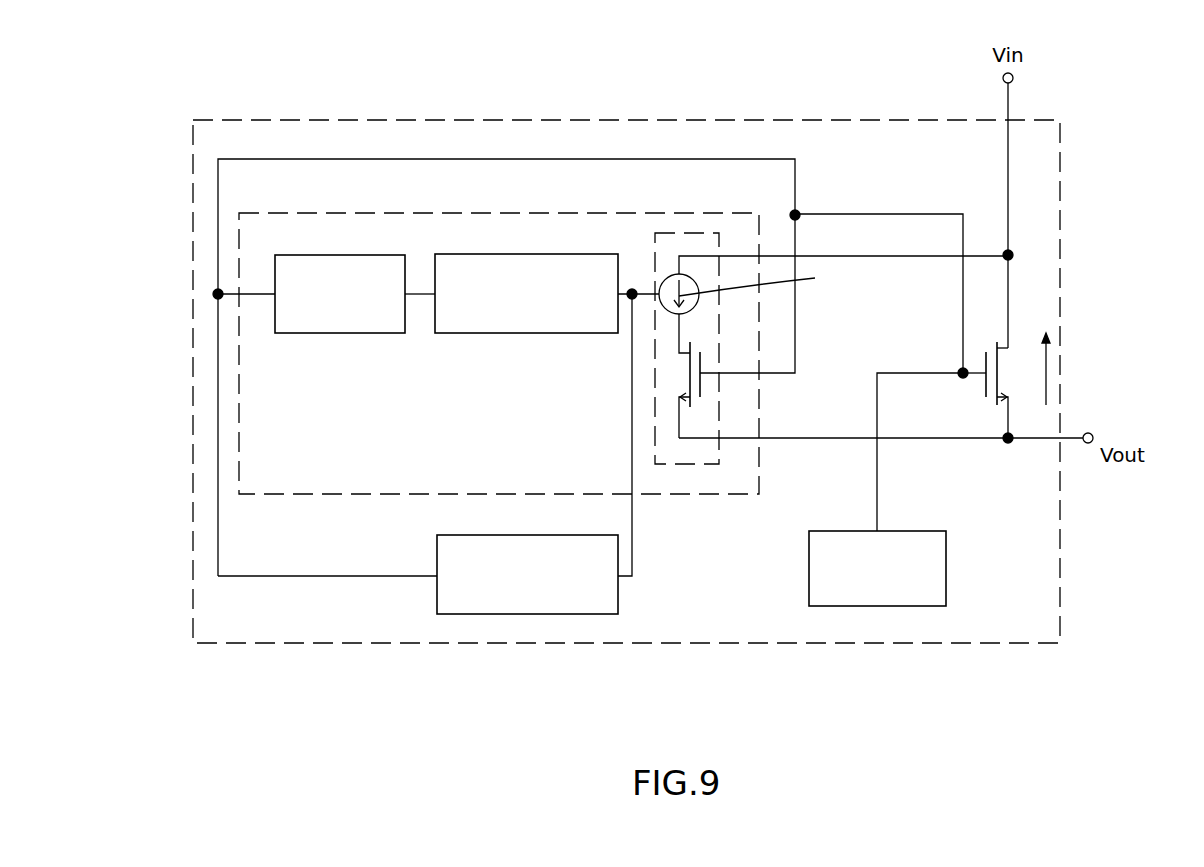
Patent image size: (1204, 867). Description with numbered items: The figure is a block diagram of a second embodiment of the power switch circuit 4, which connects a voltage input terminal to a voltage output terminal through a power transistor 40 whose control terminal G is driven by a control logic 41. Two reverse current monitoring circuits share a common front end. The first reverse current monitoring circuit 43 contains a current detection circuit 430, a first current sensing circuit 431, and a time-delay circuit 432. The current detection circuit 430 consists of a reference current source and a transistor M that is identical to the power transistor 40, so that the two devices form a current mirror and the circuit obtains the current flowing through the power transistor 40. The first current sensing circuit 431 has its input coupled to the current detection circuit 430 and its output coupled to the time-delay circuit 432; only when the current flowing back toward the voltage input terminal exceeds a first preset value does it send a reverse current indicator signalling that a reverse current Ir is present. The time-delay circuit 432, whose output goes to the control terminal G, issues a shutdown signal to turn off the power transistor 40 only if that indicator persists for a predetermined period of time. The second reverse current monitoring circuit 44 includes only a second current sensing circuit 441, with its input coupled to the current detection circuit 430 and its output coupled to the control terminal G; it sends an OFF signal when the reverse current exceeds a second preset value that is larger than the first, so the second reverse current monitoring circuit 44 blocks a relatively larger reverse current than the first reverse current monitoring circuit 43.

The power switch circuit 4 is at (908, 118).
The power transistor 40 is at (1002, 453).
The control logic 41 is at (877, 606).
The first reverse current monitoring circuit 43 is at (379, 213).
The current detection circuit 430 is at (687, 464).
The first current sensing circuit 431 is at (552, 253).
The time-delay circuit 432 is at (342, 333).
The second reverse current monitoring circuit 44 is at (470, 640).
The second current sensing circuit 441 is at (553, 614).